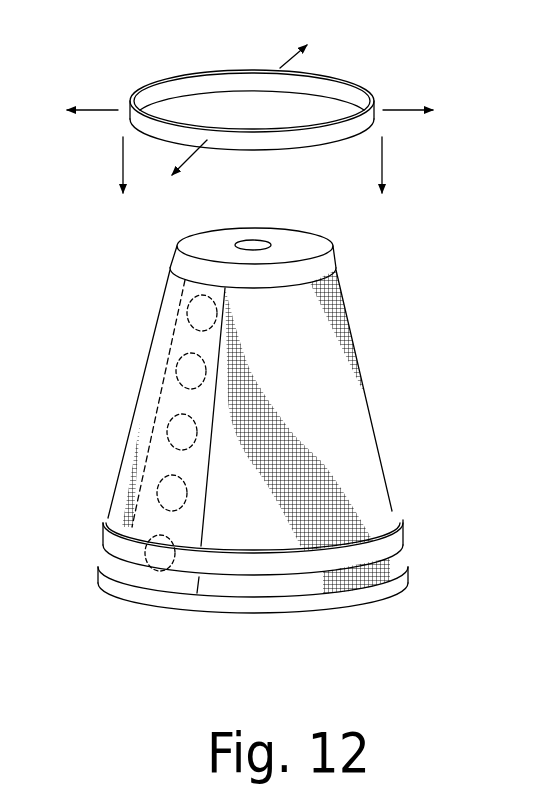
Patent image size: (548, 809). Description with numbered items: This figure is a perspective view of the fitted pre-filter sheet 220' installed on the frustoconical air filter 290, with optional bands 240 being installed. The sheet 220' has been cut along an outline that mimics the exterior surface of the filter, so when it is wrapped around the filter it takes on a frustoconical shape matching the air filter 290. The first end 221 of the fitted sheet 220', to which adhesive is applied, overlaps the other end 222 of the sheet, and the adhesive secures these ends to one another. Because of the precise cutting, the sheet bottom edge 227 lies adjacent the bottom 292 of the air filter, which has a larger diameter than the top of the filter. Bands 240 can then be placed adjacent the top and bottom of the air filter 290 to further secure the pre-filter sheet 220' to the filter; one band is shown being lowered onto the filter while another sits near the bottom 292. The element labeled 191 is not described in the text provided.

The band 240 is at (377, 102).
The frustoconical air filter 290 is at (191, 237).
The cap rim 191 is at (334, 264).
The first end 221 is at (340, 290).
The fitted pre-filter sheet 220' is at (232, 450).
The end 222 is at (123, 568).
The sheet bottom edge 227 is at (295, 588).
The bottom 292 is at (402, 578).